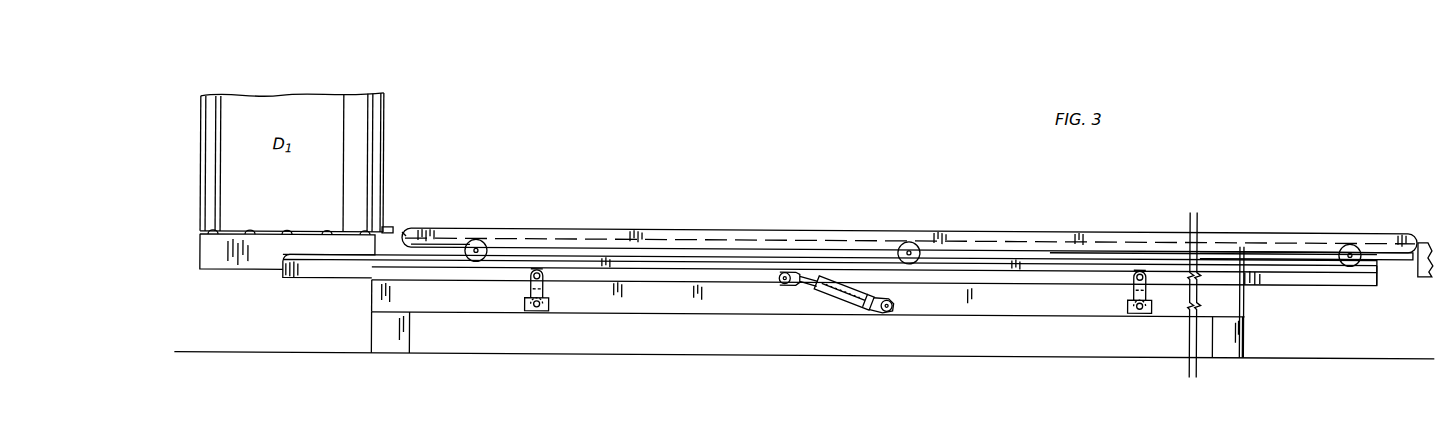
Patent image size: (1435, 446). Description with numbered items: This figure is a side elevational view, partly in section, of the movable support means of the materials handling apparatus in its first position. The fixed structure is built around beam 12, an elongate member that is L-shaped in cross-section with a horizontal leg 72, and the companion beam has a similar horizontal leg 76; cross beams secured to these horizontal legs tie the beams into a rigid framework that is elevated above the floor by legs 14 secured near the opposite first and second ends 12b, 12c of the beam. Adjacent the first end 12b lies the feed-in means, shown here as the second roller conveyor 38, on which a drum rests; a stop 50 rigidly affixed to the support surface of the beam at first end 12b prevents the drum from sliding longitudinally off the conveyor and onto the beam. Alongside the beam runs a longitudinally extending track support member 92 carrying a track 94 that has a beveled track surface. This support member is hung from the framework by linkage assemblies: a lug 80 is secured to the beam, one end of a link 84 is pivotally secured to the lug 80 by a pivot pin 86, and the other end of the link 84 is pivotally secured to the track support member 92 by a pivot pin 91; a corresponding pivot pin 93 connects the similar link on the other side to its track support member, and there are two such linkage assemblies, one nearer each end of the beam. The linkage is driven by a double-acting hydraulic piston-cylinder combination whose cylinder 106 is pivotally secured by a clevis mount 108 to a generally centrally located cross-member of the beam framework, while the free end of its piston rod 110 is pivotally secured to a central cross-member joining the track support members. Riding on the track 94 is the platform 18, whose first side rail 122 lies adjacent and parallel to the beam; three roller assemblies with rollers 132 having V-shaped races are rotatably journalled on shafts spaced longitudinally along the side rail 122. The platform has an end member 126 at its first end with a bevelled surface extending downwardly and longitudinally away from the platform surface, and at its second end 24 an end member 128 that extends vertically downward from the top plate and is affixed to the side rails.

The beam 12 is at (1034, 282).
The first end of beam 12 12b is at (402, 231).
The second end of beam 12 12c is at (1247, 298).
The legs 14 is at (390, 345).
The platform 18 is at (796, 228).
The second end of platform 24 is at (1413, 243).
The second roller conveyor 38 is at (289, 229).
The stop 50 is at (392, 227).
The horizontal leg 72 is at (968, 283).
The horizontal leg 76 is at (1178, 318).
The lug 80 is at (552, 303).
The link 84 is at (527, 300).
The pivot pin 86 is at (538, 306).
The pivot pin 91 is at (541, 270).
The track support member 92 is at (715, 281).
The pivot pin 93 is at (1141, 268).
The track 94 is at (1058, 262).
The cylinder 106 is at (855, 298).
The clevis mount 108 is at (893, 310).
The piston rod 110 is at (804, 283).
The first side rail 122 is at (660, 232).
The end member 126 is at (400, 233).
The end member 128 is at (1426, 238).
The rollers 132 is at (476, 262).